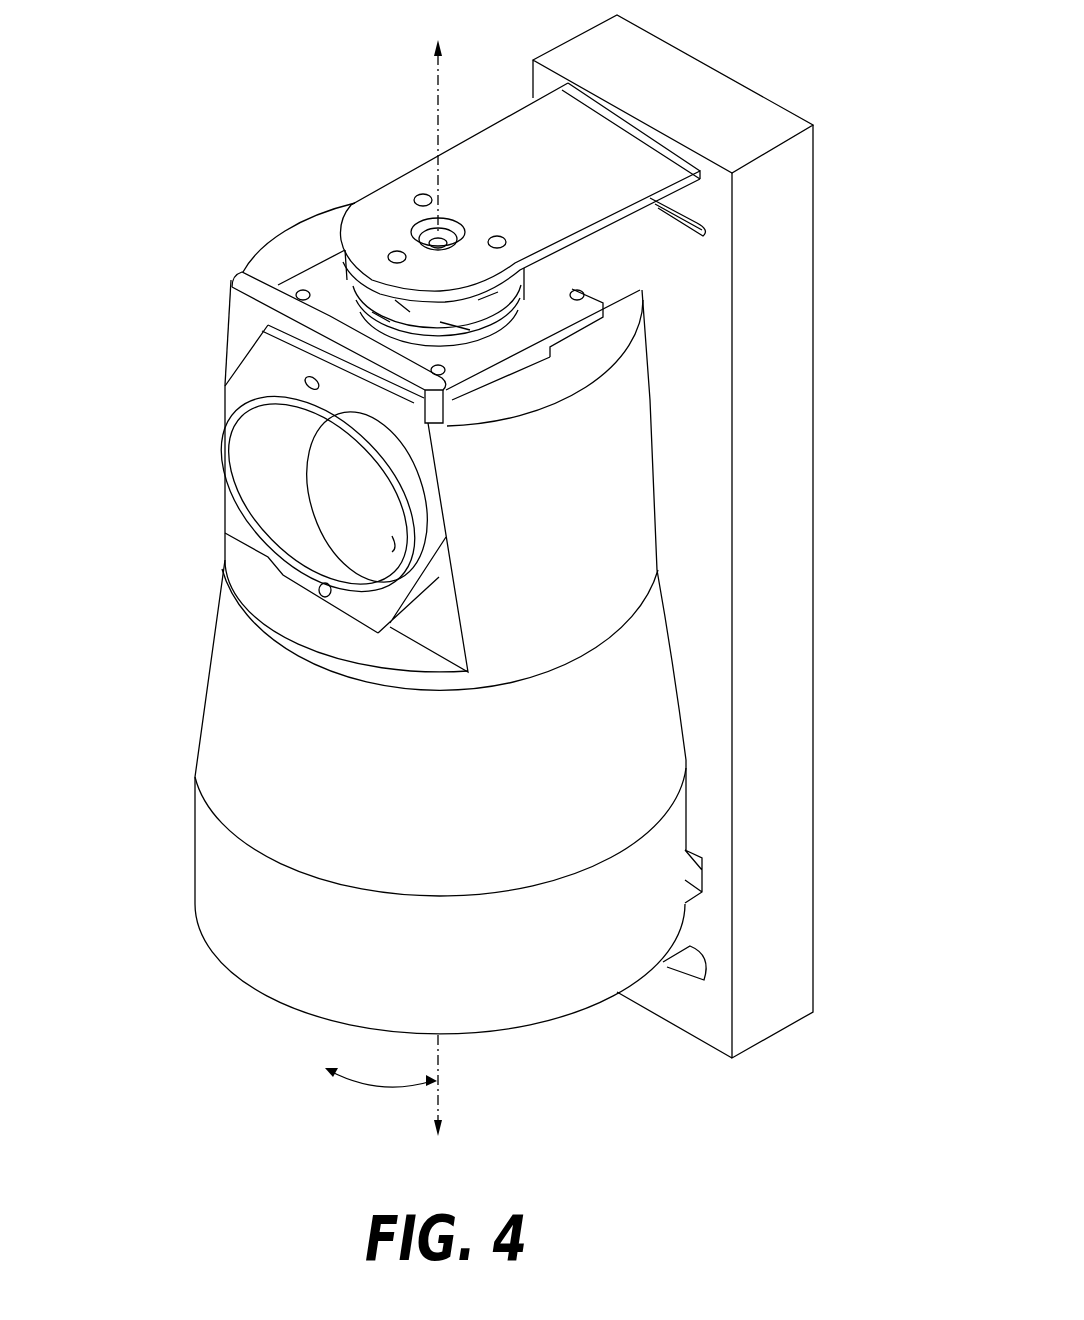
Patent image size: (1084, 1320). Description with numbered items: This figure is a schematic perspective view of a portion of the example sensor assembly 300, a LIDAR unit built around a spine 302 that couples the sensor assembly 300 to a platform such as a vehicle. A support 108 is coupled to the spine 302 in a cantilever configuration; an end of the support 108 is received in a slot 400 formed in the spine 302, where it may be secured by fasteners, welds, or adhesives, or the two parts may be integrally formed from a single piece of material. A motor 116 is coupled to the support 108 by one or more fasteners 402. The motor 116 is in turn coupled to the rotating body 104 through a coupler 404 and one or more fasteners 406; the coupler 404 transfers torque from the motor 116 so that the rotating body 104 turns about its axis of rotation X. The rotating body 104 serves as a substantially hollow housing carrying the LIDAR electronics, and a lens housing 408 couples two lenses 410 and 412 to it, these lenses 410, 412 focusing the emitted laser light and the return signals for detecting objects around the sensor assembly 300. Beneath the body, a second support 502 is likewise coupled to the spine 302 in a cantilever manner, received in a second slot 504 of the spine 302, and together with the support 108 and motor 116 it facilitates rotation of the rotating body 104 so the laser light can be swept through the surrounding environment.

The sensor assembly 300 is at (340, 76).
The rotating body 104 is at (225, 693).
The support 108 is at (521, 142).
The motor 116 is at (343, 246).
The spine 302 is at (814, 153).
The slot 400 is at (701, 179).
The fasteners 402 is at (421, 195).
The coupler 404 is at (559, 278).
The fasteners 406 is at (586, 295).
The lens housing 408 is at (431, 452).
The lens 410 is at (258, 443).
The lens 412 is at (396, 538).
The second support 502 is at (696, 870).
The second slot 504 is at (701, 883).